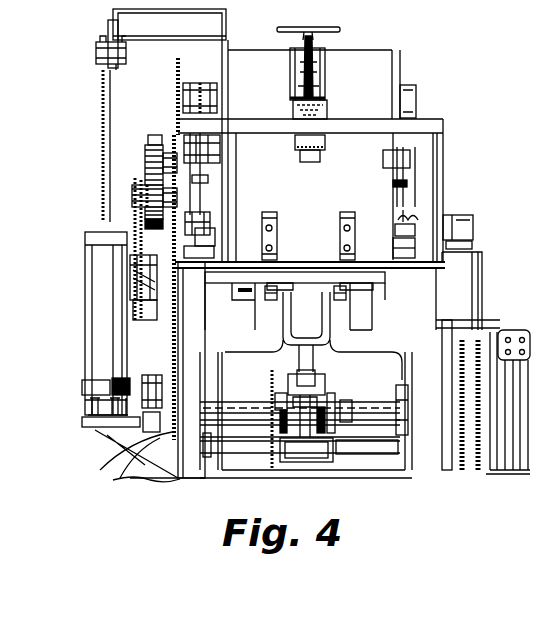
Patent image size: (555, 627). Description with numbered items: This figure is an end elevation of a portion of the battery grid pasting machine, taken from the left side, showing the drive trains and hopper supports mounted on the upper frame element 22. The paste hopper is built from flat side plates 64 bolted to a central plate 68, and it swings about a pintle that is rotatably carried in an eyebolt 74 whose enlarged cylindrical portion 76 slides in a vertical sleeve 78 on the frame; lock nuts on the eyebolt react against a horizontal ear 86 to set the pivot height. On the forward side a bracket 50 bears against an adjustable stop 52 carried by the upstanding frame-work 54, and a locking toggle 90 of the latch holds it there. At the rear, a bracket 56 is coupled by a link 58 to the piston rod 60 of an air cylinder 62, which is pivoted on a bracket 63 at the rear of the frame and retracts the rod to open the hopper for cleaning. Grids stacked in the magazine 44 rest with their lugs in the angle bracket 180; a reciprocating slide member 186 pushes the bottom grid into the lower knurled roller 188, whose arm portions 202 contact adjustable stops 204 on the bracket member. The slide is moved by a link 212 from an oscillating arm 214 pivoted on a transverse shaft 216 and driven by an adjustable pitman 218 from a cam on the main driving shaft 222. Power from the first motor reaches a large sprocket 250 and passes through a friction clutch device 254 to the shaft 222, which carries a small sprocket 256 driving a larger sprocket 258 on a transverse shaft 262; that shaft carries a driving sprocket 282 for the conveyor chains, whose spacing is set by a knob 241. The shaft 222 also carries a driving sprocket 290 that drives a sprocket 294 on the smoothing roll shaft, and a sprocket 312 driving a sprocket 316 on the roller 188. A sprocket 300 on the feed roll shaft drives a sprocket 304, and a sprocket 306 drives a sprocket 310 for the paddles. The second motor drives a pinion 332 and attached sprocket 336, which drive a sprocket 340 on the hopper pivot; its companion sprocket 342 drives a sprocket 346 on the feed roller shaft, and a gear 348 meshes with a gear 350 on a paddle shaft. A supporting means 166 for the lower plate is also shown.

The upper frame element 22 is at (184, 480).
The grid magazine 44 is at (346, 212).
The bracket 50 is at (330, 73).
The adjustable stop 52 is at (322, 110).
The frame-work 54 is at (445, 137).
The bracket 56 is at (227, 25).
The link 58 is at (108, 38).
The piston rod 60 is at (103, 90).
The air cylinder 62 is at (86, 315).
The bracket 63 is at (90, 412).
The side plates 64 is at (229, 92).
The central plate 68 is at (368, 49).
The eyebolt 74 is at (475, 225).
The enlarged cylindrical portion 76 is at (474, 246).
The vertical sleeve 78 is at (485, 256).
The ear 86 is at (142, 380).
The locking toggle 90 is at (310, 27).
The supporting means 166 is at (206, 348).
The angle bracket 180 is at (236, 186).
The reciprocating slide member 186 is at (342, 300).
The lower knurled roller 188 is at (302, 272).
The forwardly extending arm portions 202 is at (214, 238).
The adjustable stops 204 is at (210, 222).
The link 212 is at (270, 300).
The oscillating arm 214 is at (322, 342).
The transverse shaft 216 is at (343, 466).
The adjustable pitman 218 is at (325, 378).
The main driving shaft 222 is at (380, 458).
The manually rotatable knob 241 is at (112, 380).
The sprocket 250 is at (460, 474).
The friction clutch device 254 is at (494, 476).
The small sprocket 256 is at (258, 468).
The sprocket 258 is at (275, 398).
The transverse shaft 262 is at (352, 398).
The driving sprocket 282 is at (396, 383).
The driving sprocket 290 is at (128, 448).
The sprocket 294 is at (133, 272).
The sprocket 300 is at (130, 260).
The sprocket 304 is at (175, 66).
The sprocket 306 is at (200, 83).
The sprocket 310 is at (182, 145).
The sprocket 312 is at (145, 482).
The sprocket 316 is at (133, 302).
The pinion 332 is at (120, 476).
The sprocket 336 is at (100, 430).
The sprocket 340 is at (145, 212).
The sprocket 342 is at (145, 226).
The sprocket 346 is at (132, 192).
The gear 348 is at (145, 155).
The gear 350 is at (151, 135).